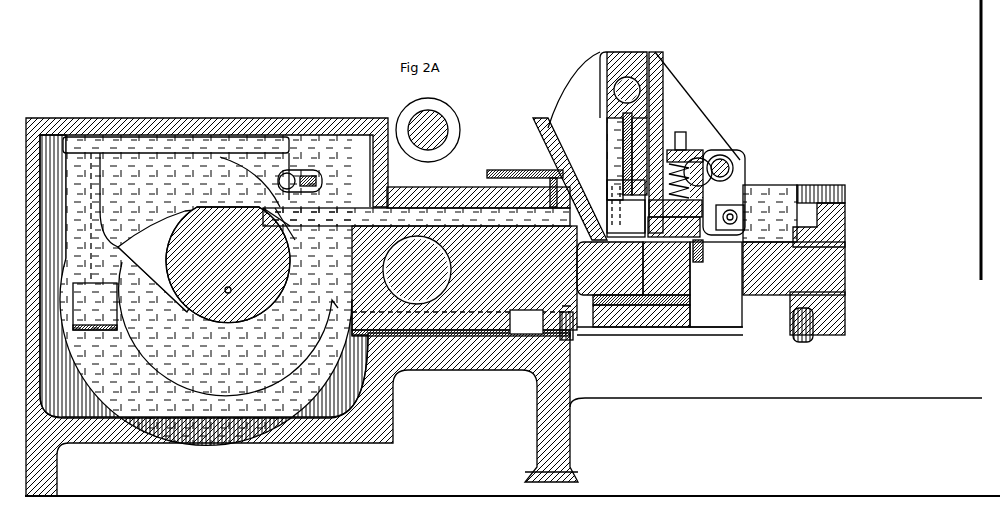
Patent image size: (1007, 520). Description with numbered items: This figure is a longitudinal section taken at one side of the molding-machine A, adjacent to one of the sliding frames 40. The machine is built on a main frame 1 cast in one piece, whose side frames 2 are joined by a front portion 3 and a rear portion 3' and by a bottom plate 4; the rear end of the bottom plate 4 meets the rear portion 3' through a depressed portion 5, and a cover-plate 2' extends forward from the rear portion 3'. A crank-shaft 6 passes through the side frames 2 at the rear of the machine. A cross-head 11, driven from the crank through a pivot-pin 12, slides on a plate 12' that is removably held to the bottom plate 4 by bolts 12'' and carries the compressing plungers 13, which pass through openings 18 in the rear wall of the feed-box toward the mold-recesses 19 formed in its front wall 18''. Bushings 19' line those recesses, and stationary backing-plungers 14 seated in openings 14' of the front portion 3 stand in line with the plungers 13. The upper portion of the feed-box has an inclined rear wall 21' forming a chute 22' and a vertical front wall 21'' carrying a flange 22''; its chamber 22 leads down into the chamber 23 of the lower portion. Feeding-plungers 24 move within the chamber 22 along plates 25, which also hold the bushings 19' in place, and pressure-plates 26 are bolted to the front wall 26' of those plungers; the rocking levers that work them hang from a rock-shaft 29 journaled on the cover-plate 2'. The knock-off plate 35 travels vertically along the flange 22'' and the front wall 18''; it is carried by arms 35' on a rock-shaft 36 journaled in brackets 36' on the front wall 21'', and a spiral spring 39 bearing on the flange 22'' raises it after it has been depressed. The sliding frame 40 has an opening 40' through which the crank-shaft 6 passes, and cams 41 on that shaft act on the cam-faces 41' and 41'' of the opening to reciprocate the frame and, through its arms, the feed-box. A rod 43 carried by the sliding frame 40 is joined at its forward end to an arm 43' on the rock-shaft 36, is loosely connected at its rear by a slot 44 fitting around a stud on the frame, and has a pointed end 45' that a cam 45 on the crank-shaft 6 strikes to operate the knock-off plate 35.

The main frame 1 is at (776, 409).
The side frames 2 is at (650, 389).
The cover-plate 2' is at (302, 299).
The front end portion 3 is at (819, 216).
The rear end portion 3' is at (204, 290).
The bottom plate 4 is at (450, 371).
The depressed portion 5 is at (100, 404).
The crank-shaft 6 is at (322, 182).
The cross-head 11 is at (464, 278).
The pivot-pin 12 is at (514, 242).
The plate 12' is at (461, 323).
The bolts 12'' is at (651, 335).
The compressing plungers 13 is at (610, 268).
The stationary backing-plungers 14 is at (794, 268).
The openings 14' is at (802, 317).
The openings 18 is at (626, 222).
The front wall 18'' is at (674, 229).
The mold-recesses 19 is at (692, 284).
The bushings 19' is at (641, 333).
The rear wall 21' is at (547, 179).
The front wall 21'' is at (677, 66).
The chamber 22 is at (597, 126).
The bracket foot 22' is at (492, 189).
The flange 22'' is at (675, 210).
The chamber 23 is at (617, 308).
The feeding-plungers 24 is at (628, 60).
The plates 25 is at (655, 127).
The pressure-plates 26 is at (601, 152).
The front wall 26' is at (626, 219).
The rock-shaft 29 is at (440, 130).
The knock-off plate 35 is at (711, 251).
The arms 35' is at (715, 157).
The rock-shaft 36 is at (741, 192).
The brackets 36' is at (697, 106).
The spiral spring 39 is at (684, 156).
The sliding frames 40 is at (206, 290).
The openings 40' is at (101, 211).
The cams 41 is at (166, 260).
The cam-face 41' is at (95, 304).
The cam-face 41'' is at (302, 270).
The rod 43 is at (416, 217).
The arm 43' is at (767, 213).
The slot 44 is at (298, 173).
The cam 45 is at (254, 208).
The pointed end 45' is at (295, 225).
The machine A is at (131, 475).